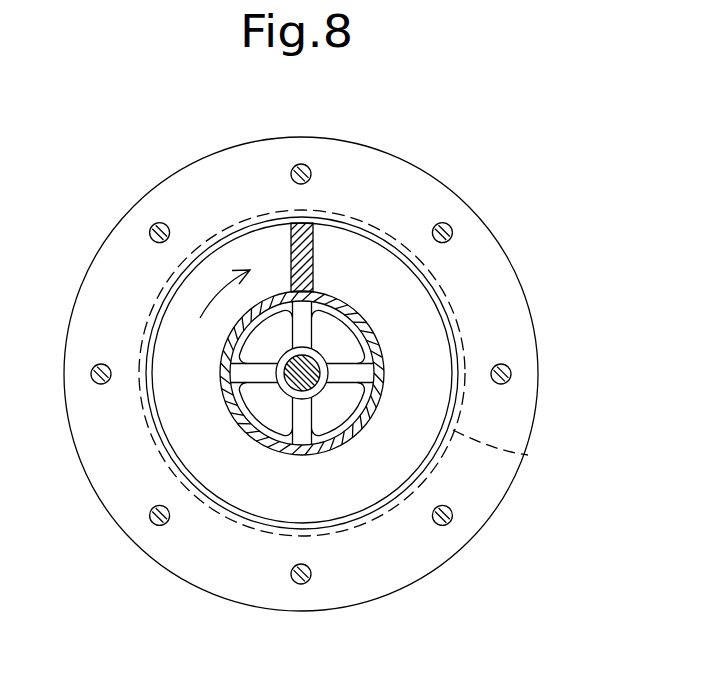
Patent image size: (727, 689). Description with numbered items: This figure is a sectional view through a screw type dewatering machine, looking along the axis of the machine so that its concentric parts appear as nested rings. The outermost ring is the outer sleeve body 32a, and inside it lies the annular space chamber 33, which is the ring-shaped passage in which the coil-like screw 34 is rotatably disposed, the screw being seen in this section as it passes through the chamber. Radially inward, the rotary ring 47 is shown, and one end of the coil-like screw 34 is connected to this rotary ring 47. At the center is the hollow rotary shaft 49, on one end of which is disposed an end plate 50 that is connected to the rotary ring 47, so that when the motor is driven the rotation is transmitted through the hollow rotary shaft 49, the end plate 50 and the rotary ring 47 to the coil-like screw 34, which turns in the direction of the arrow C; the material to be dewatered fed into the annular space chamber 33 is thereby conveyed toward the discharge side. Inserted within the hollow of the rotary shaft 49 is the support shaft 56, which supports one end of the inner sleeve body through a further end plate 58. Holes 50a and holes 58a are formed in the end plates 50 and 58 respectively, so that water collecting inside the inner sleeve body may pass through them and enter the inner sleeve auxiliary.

The outer sleeve body 32a is at (528, 455).
The annular space chamber 33 is at (374, 518).
The coil-like screw 34 is at (315, 260).
The rotary ring 47 is at (375, 337).
The hollow rotary shaft 49 is at (317, 480).
The end plate 50 is at (300, 430).
The holes 50a is at (268, 420).
The support shaft 56 is at (307, 372).
The end plate 58 is at (362, 376).
The holes 58a is at (340, 407).
The arrow C is at (223, 285).